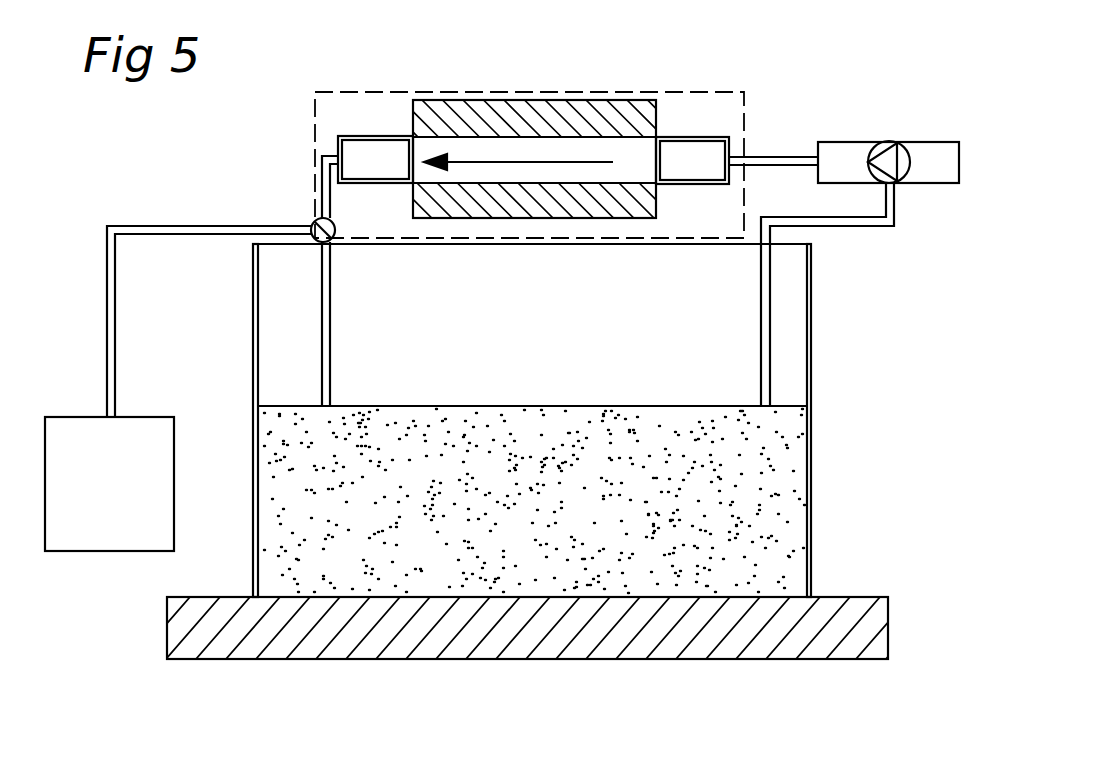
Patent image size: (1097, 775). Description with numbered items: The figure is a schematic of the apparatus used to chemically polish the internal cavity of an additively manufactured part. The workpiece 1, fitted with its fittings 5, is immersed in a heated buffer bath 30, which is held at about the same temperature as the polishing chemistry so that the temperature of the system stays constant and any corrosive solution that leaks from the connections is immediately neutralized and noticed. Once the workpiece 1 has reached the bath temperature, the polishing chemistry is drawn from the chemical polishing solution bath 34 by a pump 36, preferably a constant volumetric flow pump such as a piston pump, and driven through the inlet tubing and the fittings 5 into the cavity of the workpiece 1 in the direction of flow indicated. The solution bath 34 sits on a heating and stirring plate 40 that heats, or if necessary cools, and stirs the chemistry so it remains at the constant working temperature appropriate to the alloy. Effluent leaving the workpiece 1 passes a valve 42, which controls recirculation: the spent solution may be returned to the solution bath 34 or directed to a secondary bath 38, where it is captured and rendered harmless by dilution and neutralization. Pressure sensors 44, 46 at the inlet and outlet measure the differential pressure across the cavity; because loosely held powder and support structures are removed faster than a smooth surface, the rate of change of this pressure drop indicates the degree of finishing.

The workpiece 1 is at (606, 100).
The fittings 5 is at (693, 138).
The heated buffer bath 30 is at (746, 105).
The chemical polishing solution bath 34 is at (792, 477).
The pump 36 is at (921, 147).
The secondary bath 38 is at (80, 416).
The heating and stirring plate 40 is at (852, 599).
The valve 42 is at (312, 228).
The pressure sensor 44 is at (718, 160).
The pressure sensor 46 is at (371, 147).